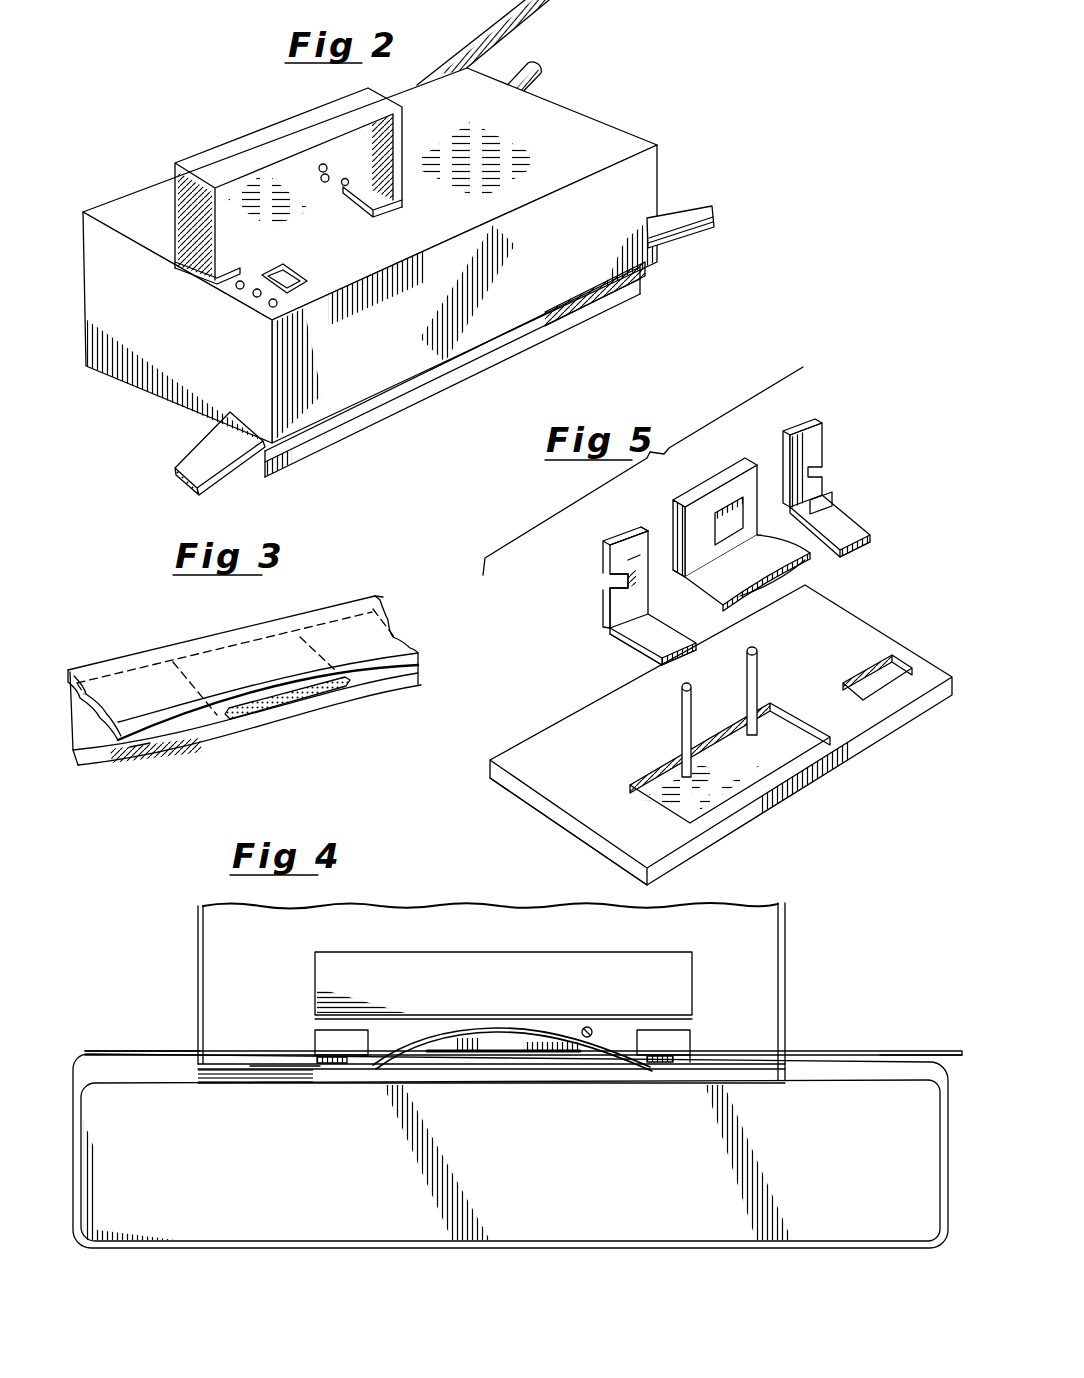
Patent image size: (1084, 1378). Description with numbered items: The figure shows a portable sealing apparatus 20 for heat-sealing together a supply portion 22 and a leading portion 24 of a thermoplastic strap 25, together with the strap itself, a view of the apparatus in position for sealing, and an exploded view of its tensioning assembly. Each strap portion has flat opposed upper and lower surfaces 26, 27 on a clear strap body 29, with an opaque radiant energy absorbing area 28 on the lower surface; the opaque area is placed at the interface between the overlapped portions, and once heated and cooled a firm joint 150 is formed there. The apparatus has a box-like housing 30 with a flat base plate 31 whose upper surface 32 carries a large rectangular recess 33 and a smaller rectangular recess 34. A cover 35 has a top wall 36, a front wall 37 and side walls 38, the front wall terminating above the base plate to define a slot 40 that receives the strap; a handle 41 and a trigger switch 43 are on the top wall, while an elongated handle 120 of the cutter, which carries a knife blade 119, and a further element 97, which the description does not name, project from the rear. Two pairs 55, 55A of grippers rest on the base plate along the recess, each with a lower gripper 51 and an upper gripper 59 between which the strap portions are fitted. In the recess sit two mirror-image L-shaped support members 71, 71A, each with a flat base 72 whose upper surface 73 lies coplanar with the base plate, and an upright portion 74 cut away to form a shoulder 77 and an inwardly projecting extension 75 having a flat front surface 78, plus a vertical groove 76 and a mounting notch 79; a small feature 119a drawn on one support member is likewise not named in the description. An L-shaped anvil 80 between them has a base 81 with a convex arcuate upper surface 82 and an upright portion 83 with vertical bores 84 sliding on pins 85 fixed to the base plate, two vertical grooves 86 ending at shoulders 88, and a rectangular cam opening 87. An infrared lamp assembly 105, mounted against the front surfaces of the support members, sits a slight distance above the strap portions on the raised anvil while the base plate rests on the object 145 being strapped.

In FIG. 2, the sealing apparatus 20 is at (184, 118).
In FIG. 2, the supply portion of strap 22 is at (693, 210).
In FIG. 3, the supply portion of strap 22 is at (337, 613).
In FIG. 4, the supply portion of strap 22 is at (834, 1047).
In FIG. 2, the leading portion of strap 24 is at (685, 240).
In FIG. 3, the leading portion of strap 24 is at (77, 757).
In FIG. 4, the leading portion of strap 24 is at (253, 1066).
In FIG. 3, the strap 25 is at (143, 643).
In FIG. 4, the strap 25 is at (107, 1047).
In FIG. 3, the upper surface of strap 26 is at (361, 655).
In FIG. 4, the upper surface of strap 26 is at (887, 1047).
In FIG. 3, the lower surface of strap 27 is at (190, 742).
In FIG. 4, the lower surface of strap 27 is at (150, 1060).
In FIG. 3, the opaque radiant energy absorbing area 28 is at (420, 675).
In FIG. 3, the strap body 29 is at (383, 598).
In FIG. 2, the housing 30 is at (578, 107).
In FIG. 2, the base plate 31 is at (431, 386).
In FIG. 5, the base plate 31 is at (533, 797).
In FIG. 4, the base plate 31 is at (273, 1077).
In FIG. 2, the upper surface of base plate 32 is at (385, 403).
In FIG. 5, the upper surface of base plate 32 is at (580, 775).
In FIG. 4, the upper surface of base plate 32 is at (217, 1066).
In FIG. 5, the large rectangular recess 33 is at (743, 783).
In FIG. 5, the smaller rectangular recess 34 is at (893, 677).
In FIG. 2, the cover 35 is at (117, 196).
In FIG. 4, the cover 35 is at (197, 930).
In FIG. 2, the top wall 36 is at (618, 140).
In FIG. 2, the front wall 37 is at (560, 310).
In FIG. 2, the side walls 38 is at (150, 382).
In FIG. 2, the slot 40 is at (518, 330).
In FIG. 2, the handle 41 is at (278, 128).
In FIG. 2, the trigger switch 43 is at (293, 272).
In FIG. 4, the lower gripper 51 is at (338, 1064).
In FIG. 4, the pair of grippers 55 is at (313, 1025).
In FIG. 4, the pair of grippers 55A is at (694, 1020).
In FIG. 4, the upper gripper 59 is at (317, 1040).
In FIG. 5, the support member 71 is at (607, 631).
In FIG. 5, the support member 71A is at (836, 492).
In FIG. 5, the base of support member 72 is at (645, 652).
In FIG. 5, the upper surface of base 73 is at (666, 644).
In FIG. 5, the upright portion 74 is at (610, 597).
In FIG. 5, the extension 75 is at (647, 540).
In FIG. 5, the vertical groove 76 is at (638, 533).
In FIG. 5, the horizontal shoulder 77 is at (640, 638).
In FIG. 5, the front surface of extension 78 is at (640, 565).
In FIG. 5, the mounting notch 79 is at (610, 575).
In FIG. 5, the anvil 80 is at (750, 533).
In FIG. 5, the anvil base 81 is at (757, 588).
In FIG. 4, the anvil base 81 is at (470, 1053).
In FIG. 5, the arcuate upper surface 82 is at (733, 583).
In FIG. 5, the upright portion of anvil 83 is at (727, 476).
In FIG. 5, the vertical bores 84 is at (685, 503).
In FIG. 5, the pins 85 is at (747, 670).
In FIG. 5, the vertical grooves 86 is at (670, 523).
In FIG. 5, the cam opening 87 is at (733, 540).
In FIG. 5, the shoulders 88 is at (670, 580).
In FIG. 2, the feed tube 97 is at (477, 34).
In FIG. 4, the infrared lamp assembly 105 is at (397, 958).
In FIG. 4, the knife blade 119 is at (592, 1034).
In FIG. 5, the tab 119a is at (830, 507).
In FIG. 2, the handle 120 is at (535, 56).
In FIG. 4, the object 145 is at (211, 1228).
In FIG. 3, the joint 150 is at (300, 702).